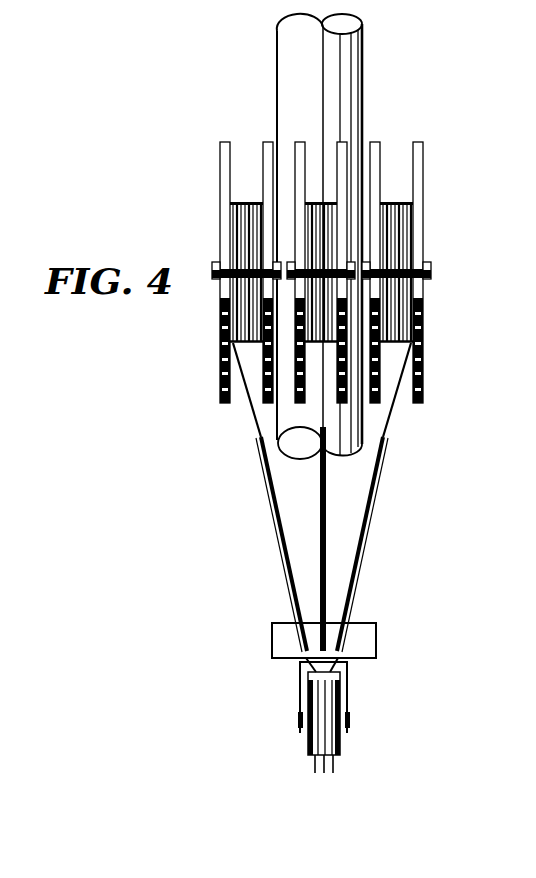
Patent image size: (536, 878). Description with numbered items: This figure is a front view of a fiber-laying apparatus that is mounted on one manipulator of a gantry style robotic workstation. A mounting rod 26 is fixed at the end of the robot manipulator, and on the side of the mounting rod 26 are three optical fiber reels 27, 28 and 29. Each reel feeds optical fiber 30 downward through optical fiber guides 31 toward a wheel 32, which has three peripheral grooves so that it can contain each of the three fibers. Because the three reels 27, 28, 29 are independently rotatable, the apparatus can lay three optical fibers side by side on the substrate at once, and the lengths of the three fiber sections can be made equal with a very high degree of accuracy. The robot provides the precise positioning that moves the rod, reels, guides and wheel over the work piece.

The mounting rod 26 is at (363, 97).
The optical fiber reel 27 is at (221, 400).
The optical fiber reel 28 is at (300, 141).
The optical fiber reel 29 is at (422, 400).
The optical fiber 30 is at (252, 416).
The optical fiber guide 31 is at (262, 472).
The wheel 32 is at (340, 742).